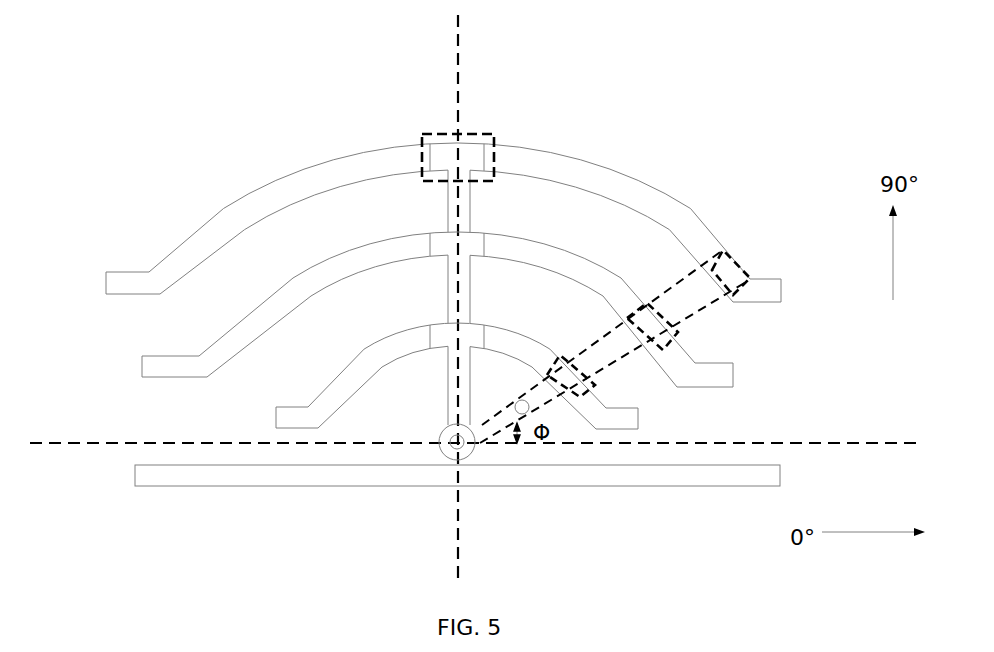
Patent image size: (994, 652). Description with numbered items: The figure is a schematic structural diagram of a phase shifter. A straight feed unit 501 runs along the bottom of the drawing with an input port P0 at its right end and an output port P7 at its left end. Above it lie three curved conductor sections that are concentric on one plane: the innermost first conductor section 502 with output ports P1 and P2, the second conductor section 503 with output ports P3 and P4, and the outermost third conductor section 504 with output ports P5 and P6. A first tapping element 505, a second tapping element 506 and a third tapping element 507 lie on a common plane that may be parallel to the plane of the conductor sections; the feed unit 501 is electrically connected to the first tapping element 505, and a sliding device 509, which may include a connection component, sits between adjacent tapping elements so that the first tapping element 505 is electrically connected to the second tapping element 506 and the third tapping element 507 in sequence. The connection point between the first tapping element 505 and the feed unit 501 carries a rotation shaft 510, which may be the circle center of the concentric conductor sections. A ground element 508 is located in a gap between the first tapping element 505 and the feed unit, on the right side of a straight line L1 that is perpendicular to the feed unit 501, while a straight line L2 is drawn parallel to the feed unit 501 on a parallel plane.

The feed unit 501 is at (527, 482).
The first conductor section 502 is at (372, 342).
The second conductor section 503 is at (290, 286).
The third conductor section 504 is at (222, 222).
The first tapping element 505 is at (458, 380).
The second tapping element 506 is at (458, 288).
The third tapping element 507 is at (458, 200).
The ground element 508 is at (519, 402).
The sliding device 509 is at (463, 132).
The rotation shaft 510 is at (452, 452).
The straight line L1 is at (456, 62).
The straight line L2 is at (128, 443).
The input port P0 is at (765, 475).
The output port P1 is at (630, 421).
The output port P2 is at (290, 421).
The output port P3 is at (722, 376).
The output port P4 is at (156, 365).
The output port P5 is at (770, 292).
The output port P6 is at (126, 283).
The output port P7 is at (150, 475).